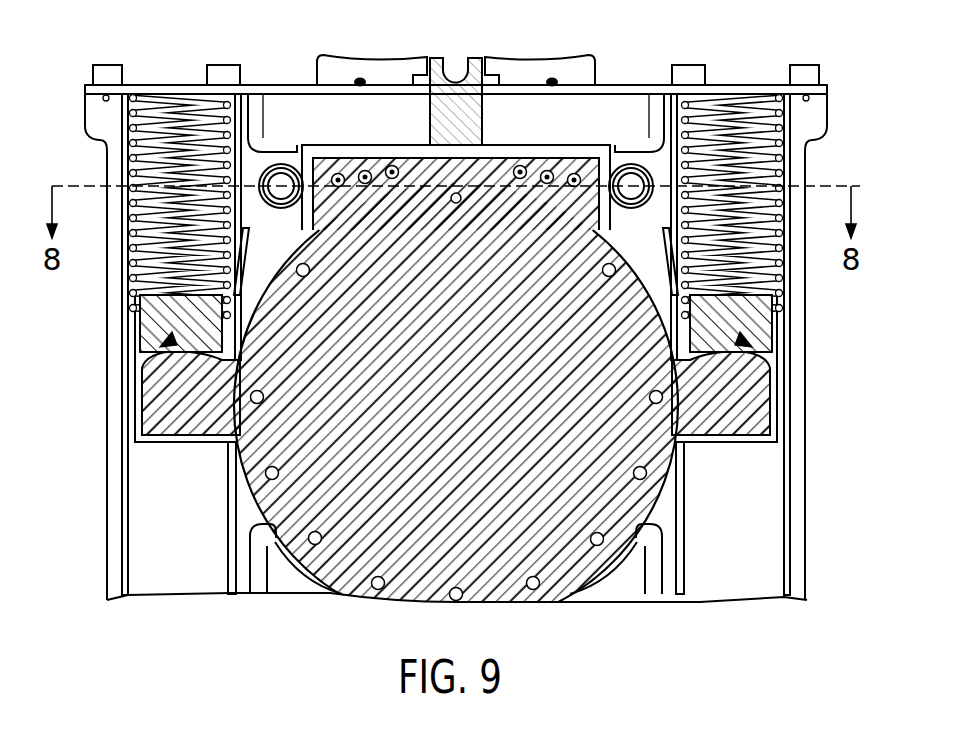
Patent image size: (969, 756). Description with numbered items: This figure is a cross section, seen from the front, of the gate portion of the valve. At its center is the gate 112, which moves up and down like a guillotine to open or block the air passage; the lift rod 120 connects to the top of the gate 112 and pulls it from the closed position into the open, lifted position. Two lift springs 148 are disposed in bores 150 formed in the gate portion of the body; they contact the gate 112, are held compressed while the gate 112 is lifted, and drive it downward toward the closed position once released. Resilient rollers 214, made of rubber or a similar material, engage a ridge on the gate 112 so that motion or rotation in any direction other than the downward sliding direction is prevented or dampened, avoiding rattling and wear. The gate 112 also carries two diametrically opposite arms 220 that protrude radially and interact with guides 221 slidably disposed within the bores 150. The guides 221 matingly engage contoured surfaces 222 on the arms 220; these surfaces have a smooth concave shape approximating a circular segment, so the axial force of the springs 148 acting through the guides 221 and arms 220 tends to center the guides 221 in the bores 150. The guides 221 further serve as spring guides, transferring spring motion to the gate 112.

The gate 112 is at (457, 373).
The lift rod 120 is at (452, 97).
The lift springs 148 is at (755, 180).
The bores 150 is at (128, 493).
The resilient rollers 214 is at (283, 188).
The arms 220 is at (158, 398).
The guides 221 is at (142, 332).
The contoured surfaces 222 is at (163, 340).